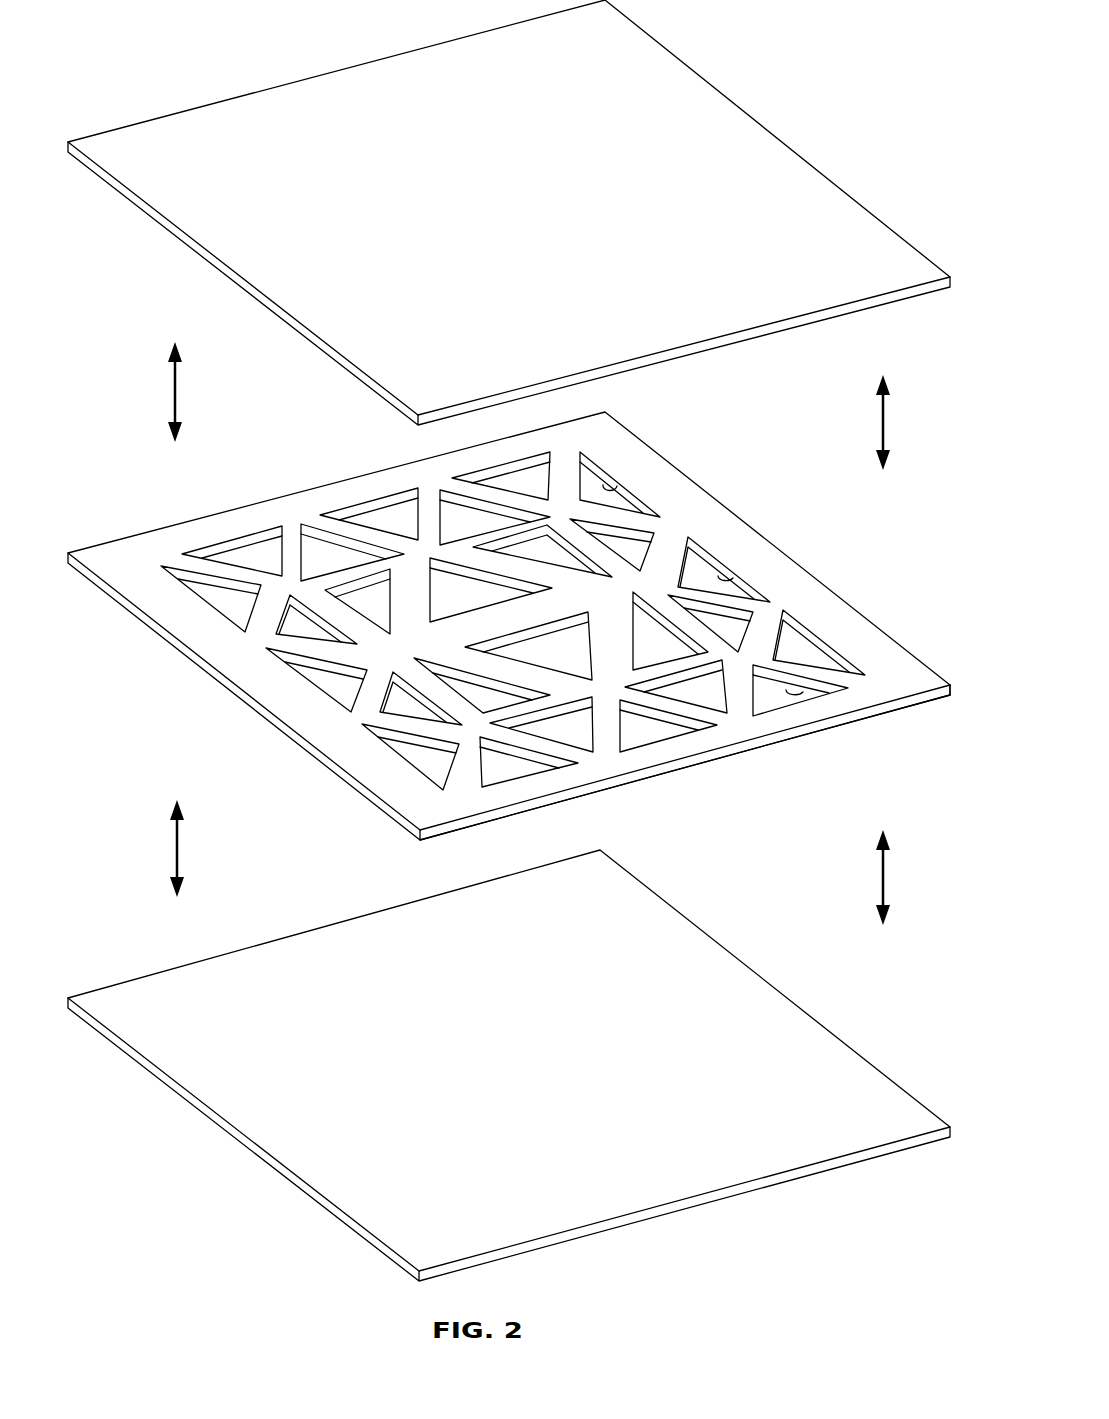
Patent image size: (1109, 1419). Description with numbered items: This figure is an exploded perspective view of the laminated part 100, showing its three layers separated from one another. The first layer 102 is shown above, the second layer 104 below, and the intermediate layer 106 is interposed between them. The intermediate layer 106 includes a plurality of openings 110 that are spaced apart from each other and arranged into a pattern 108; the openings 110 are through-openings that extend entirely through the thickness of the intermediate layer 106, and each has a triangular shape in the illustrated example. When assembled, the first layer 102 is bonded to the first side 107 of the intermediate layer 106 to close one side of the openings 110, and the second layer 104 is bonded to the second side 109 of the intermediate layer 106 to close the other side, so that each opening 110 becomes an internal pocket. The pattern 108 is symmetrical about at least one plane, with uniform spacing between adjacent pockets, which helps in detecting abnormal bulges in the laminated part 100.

The laminated part 100 is at (810, 78).
The first layer 102 is at (832, 203).
The second layer 104 is at (846, 1097).
The intermediate layer 106 is at (926, 672).
The first side 107 is at (889, 688).
The pattern 108 is at (648, 486).
The second side 109 is at (829, 735).
The openings 110 is at (610, 482).